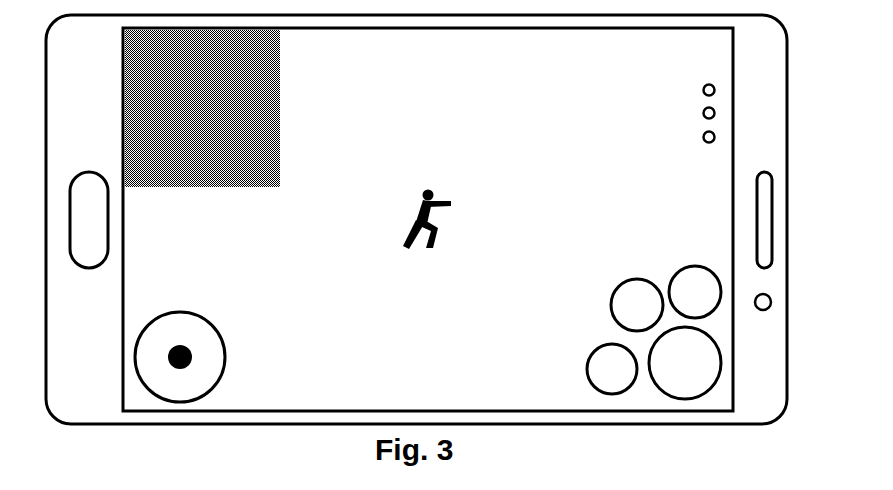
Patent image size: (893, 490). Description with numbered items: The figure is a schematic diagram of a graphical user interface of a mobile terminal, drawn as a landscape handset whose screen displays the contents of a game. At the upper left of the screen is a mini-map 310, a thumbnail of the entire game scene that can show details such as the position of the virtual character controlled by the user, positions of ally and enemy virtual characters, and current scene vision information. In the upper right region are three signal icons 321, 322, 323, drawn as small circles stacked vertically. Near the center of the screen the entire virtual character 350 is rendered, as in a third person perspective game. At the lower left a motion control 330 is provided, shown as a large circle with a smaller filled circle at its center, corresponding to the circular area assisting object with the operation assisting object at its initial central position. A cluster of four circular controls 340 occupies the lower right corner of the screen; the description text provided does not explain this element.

The mini-map 310 is at (280, 115).
The signal icon 321 is at (703, 87).
The signal icon 322 is at (703, 110).
The signal icon 323 is at (703, 134).
The motion control 330 is at (226, 362).
The virtual action buttons 340 is at (610, 315).
The virtual character 350 is at (452, 205).